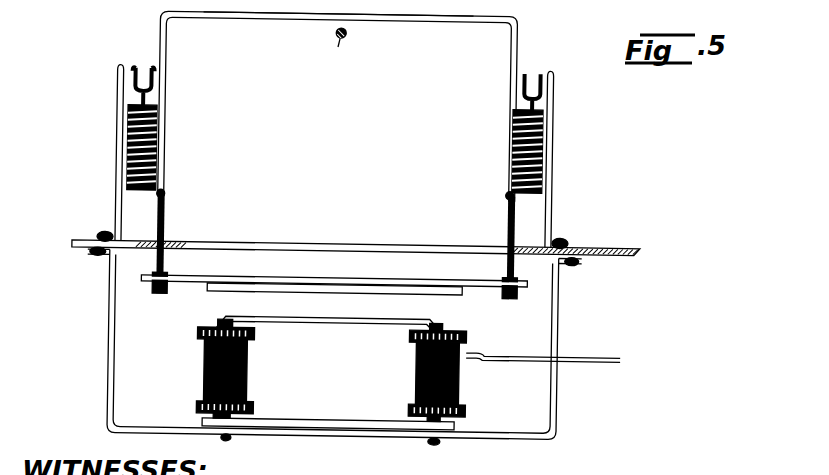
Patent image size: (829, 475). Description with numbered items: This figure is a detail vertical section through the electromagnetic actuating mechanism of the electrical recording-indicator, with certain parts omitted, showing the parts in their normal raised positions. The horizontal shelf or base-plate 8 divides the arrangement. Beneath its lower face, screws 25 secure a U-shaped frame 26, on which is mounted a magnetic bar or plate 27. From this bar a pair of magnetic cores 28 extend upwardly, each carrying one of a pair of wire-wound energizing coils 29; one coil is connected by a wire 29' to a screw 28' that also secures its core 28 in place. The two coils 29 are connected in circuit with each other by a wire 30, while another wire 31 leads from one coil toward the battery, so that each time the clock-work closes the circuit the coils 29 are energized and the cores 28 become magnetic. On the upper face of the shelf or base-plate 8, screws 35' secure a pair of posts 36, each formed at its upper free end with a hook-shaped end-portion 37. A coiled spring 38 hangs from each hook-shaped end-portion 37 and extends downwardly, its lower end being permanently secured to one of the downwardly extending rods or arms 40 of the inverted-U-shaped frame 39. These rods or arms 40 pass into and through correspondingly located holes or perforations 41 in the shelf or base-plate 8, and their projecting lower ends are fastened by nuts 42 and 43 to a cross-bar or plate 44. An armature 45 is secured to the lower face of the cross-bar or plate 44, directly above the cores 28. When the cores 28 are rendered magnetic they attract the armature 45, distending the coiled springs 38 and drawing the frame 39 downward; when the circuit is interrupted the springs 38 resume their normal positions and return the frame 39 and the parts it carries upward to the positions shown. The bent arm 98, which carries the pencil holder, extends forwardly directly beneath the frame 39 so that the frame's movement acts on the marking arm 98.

The shelf or base-plate 8 is at (82, 245).
The screws 25 is at (97, 260).
The U-shaped frame 26 is at (158, 437).
The magnetic bar or plate 27 is at (332, 424).
The magnetic cores 28 is at (334, 313).
The screw 28' is at (352, 454).
The energizing coils 29 is at (334, 372).
The wire 29' is at (310, 444).
The wire 30 is at (340, 326).
The wire 31 is at (600, 347).
The screws 35' is at (347, 220).
The posts 36 is at (117, 101).
The hook-shaped end-portion 37 is at (138, 74).
The coiled springs 38 is at (153, 121).
The inverted-U-shaped frame 39 is at (268, 24).
The rods or arms 40 is at (170, 89).
The holes or perforations 41 is at (170, 244).
The nut 42 is at (167, 276).
The nut 43 is at (153, 296).
The cross-bar or plate 44 is at (387, 273).
The armature 45 is at (298, 292).
The arm 98 is at (340, 53).